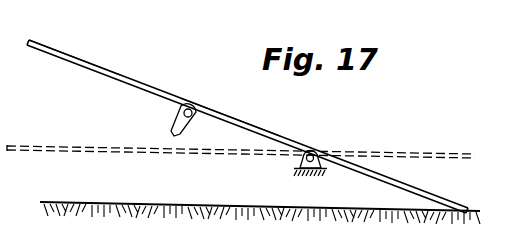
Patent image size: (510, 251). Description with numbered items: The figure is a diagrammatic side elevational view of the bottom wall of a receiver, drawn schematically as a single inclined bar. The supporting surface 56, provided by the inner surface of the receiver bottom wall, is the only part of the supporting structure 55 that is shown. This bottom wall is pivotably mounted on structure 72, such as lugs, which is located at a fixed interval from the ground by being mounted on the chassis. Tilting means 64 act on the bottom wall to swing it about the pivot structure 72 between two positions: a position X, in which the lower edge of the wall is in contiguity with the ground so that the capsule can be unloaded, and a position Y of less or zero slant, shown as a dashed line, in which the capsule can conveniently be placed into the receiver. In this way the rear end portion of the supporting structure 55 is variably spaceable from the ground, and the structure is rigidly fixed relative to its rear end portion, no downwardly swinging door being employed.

The supporting structure 55 is at (117, 82).
The supporting surface 56 is at (147, 85).
The tilting means 64 is at (172, 124).
The structure (lugs) 72 is at (298, 163).
The position X is at (43, 41).
The position Y is at (8, 145).